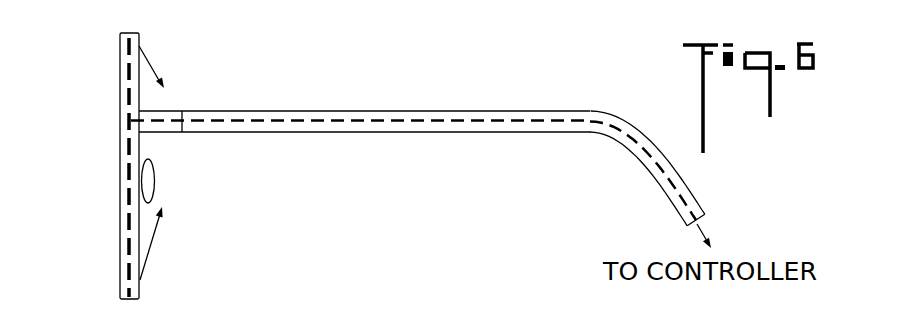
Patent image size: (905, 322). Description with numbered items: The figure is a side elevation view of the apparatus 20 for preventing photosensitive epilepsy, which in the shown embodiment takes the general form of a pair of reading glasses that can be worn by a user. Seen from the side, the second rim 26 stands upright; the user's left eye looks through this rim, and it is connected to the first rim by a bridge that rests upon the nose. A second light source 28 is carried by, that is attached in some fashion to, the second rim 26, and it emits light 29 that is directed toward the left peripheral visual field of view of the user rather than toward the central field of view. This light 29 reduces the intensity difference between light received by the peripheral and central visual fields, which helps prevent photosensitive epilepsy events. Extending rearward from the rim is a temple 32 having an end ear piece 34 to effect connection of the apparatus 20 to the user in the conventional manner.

The apparatus 20 is at (394, 149).
The second rim 26 is at (120, 212).
The second light source 28 is at (127, 144).
The light 29 is at (161, 262).
The temple 32 is at (381, 97).
The end ear piece 34 is at (697, 201).